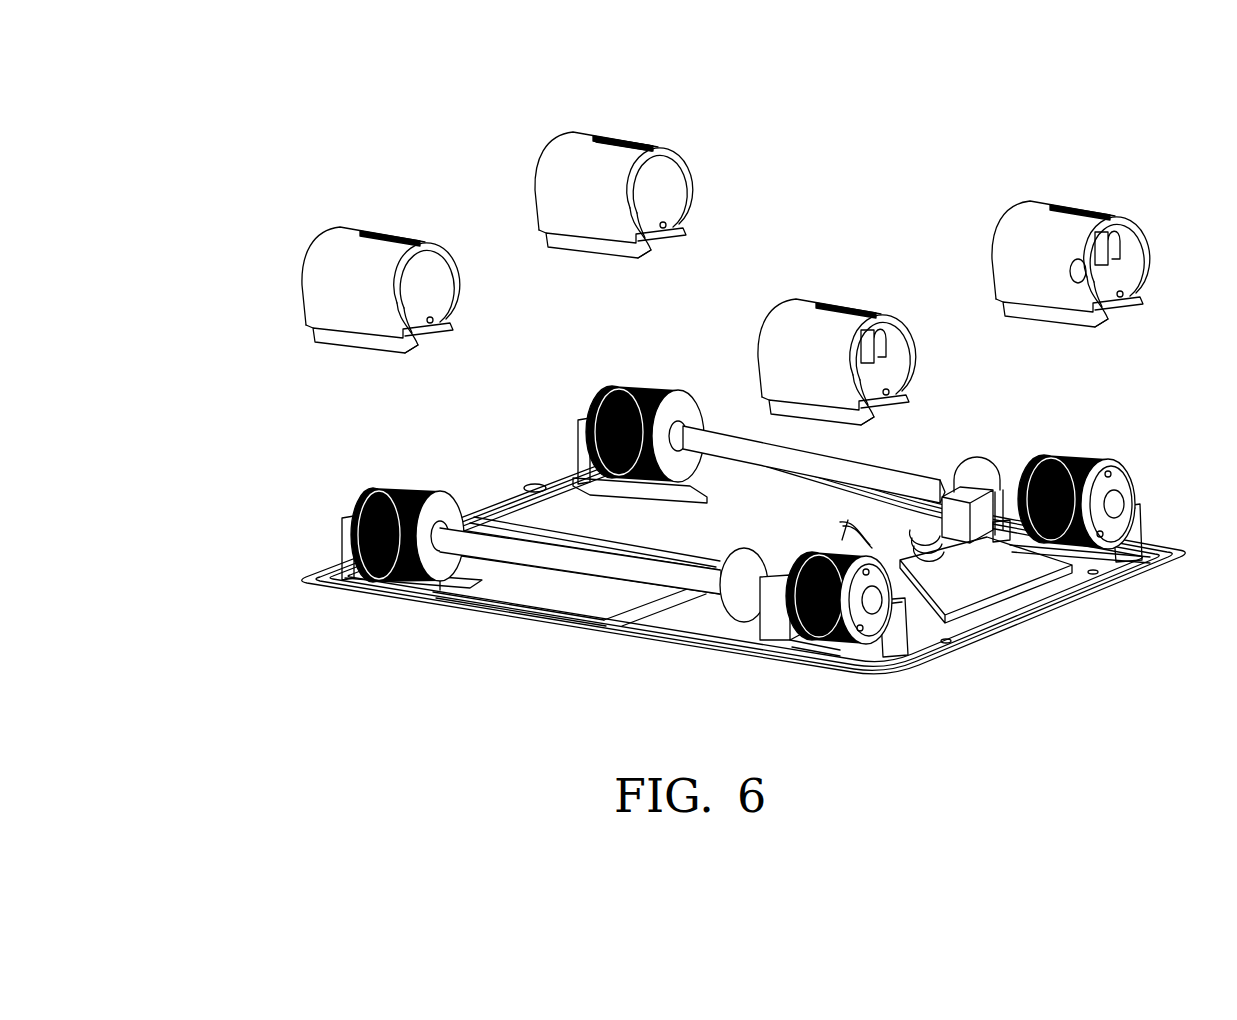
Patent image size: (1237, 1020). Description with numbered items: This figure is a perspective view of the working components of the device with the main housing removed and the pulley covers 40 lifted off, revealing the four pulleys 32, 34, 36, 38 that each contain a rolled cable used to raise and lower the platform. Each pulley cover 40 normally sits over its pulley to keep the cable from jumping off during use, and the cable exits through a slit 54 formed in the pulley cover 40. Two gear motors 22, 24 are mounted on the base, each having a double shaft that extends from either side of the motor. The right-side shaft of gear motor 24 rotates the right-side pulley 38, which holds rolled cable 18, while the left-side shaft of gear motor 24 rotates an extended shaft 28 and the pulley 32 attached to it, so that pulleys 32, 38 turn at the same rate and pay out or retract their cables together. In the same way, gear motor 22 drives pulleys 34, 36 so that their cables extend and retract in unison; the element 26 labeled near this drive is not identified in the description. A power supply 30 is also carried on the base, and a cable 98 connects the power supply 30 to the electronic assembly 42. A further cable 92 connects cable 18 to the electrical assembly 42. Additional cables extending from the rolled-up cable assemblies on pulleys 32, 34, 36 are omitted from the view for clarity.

The cable 18 is at (833, 653).
The gear motor 22 is at (990, 480).
The gear motor 24 is at (768, 602).
The shaft 26 is at (893, 473).
The extended shaft 28 is at (530, 555).
The power supply 30 is at (980, 577).
The pulley 32 is at (355, 505).
The pulley 34 is at (583, 406).
The pulley 36 is at (1102, 470).
The pulley 38 is at (862, 677).
The pulley cover 40 is at (573, 160).
The electronic assembly 42 is at (1082, 606).
The slit 54 is at (657, 135).
The cable 92 is at (847, 527).
The cable 98 is at (920, 535).